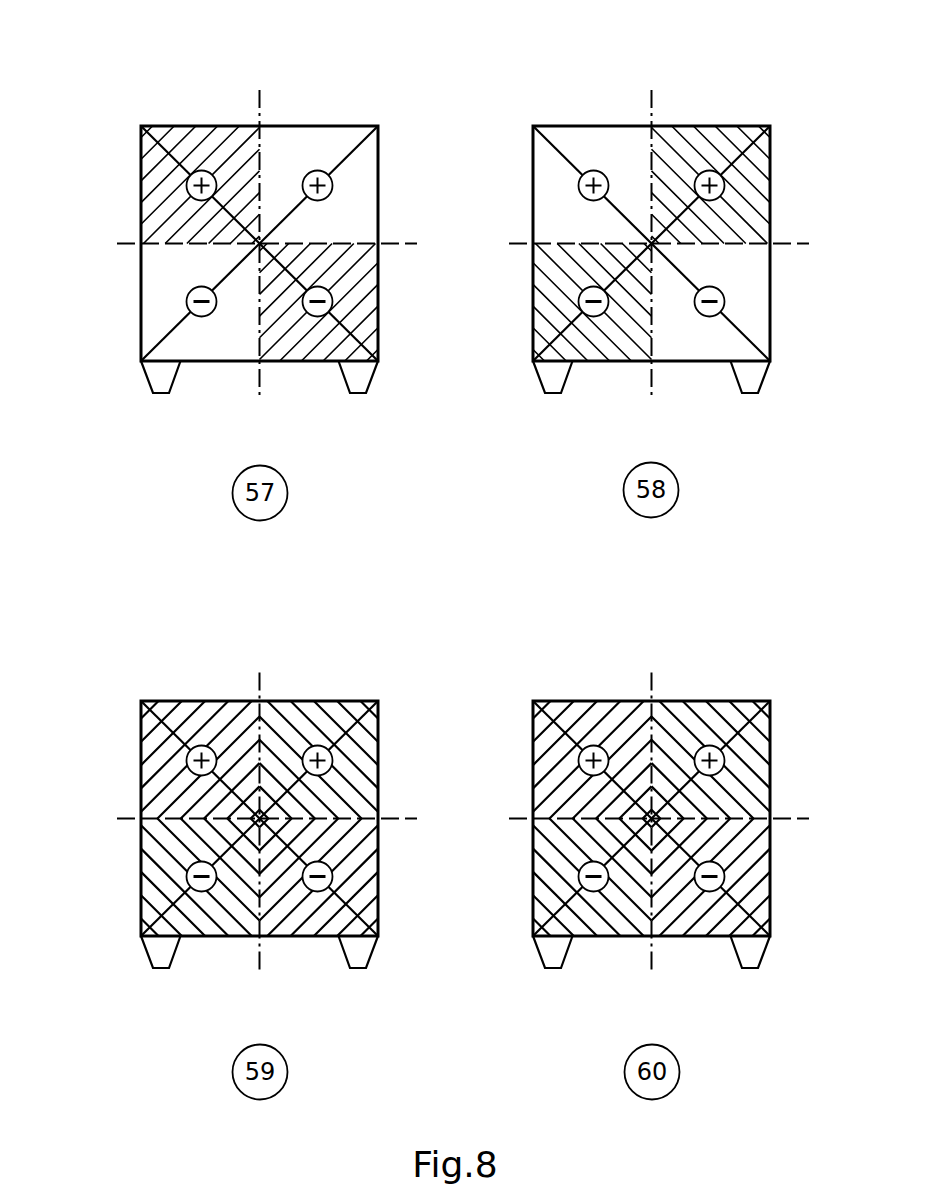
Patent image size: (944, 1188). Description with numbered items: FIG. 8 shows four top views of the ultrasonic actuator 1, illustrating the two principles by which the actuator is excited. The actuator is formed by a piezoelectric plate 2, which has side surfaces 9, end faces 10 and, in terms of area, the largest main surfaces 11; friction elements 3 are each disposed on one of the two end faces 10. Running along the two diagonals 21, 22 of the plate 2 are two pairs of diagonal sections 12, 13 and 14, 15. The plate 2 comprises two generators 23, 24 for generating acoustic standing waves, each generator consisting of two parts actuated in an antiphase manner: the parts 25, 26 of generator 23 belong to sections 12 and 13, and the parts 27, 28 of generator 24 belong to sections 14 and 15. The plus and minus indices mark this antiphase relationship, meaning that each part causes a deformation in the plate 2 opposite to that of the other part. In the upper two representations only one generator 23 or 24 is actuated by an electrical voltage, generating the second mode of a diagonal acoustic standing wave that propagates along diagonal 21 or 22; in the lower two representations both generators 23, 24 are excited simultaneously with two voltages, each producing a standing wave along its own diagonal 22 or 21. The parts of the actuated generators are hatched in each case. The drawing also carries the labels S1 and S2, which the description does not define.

The ultrasonic actuator 1 is at (516, 92).
The piezoelectric plate 2 is at (358, 223).
The friction elements 3 is at (164, 377).
The side surfaces 9 is at (140, 337).
The end faces 10 is at (177, 125).
The main surfaces 11 is at (333, 217).
The diagonal section 12 is at (167, 173).
The diagonal section 13 is at (353, 295).
The diagonal section 14 is at (353, 180).
The diagonal section 15 is at (168, 297).
The diagonal 21 is at (343, 327).
The diagonal 22 is at (175, 327).
The generator 23 is at (315, 260).
The generator 24 is at (191, 279).
The part of generator 25 is at (162, 202).
The part of generator 26 is at (360, 315).
The part of generator 27 is at (360, 200).
The part of generator 28 is at (155, 267).
The vertical symmetry axis S1 is at (457, 512).
The horizontal symmetry axis S2 is at (463, 530).